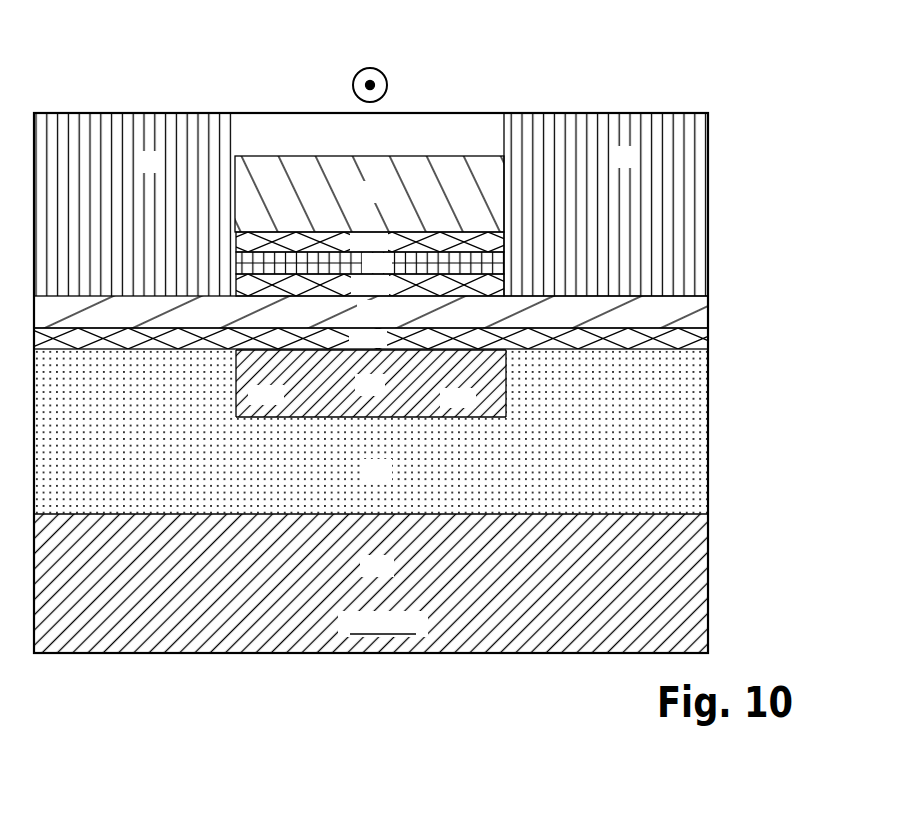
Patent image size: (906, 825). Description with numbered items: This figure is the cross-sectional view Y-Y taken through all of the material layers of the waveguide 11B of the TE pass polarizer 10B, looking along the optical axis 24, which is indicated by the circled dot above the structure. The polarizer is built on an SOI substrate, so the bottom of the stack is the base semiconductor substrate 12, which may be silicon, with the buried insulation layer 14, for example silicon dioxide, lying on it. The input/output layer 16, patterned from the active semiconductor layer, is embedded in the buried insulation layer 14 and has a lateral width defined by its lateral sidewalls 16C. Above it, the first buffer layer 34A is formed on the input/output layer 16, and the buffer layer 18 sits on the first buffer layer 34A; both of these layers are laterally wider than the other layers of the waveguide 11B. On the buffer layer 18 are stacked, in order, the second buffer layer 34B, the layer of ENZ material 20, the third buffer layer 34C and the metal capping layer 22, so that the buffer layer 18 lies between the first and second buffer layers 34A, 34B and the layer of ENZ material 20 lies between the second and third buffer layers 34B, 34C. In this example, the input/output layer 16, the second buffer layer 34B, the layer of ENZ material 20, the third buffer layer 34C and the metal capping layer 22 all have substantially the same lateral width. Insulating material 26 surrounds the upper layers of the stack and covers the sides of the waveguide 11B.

The TE pass polarizer 10B is at (83, 107).
The waveguide 11B is at (544, 176).
The base semiconductor substrate 12 is at (368, 575).
The buried insulation layer 14 is at (368, 479).
The input/output layer 16 is at (361, 394).
The lateral sidewalls 16C is at (236, 372).
The buffer layer 18 is at (363, 320).
The layer of ENZ material 20 is at (368, 271).
The metal capping layer 22 is at (368, 201).
The optical axis 24 is at (394, 80).
The insulating material 26 is at (140, 171).
The first buffer layer 34A is at (354, 348).
The second buffer layer 34B is at (356, 294).
The third buffer layer 34C is at (354, 251).